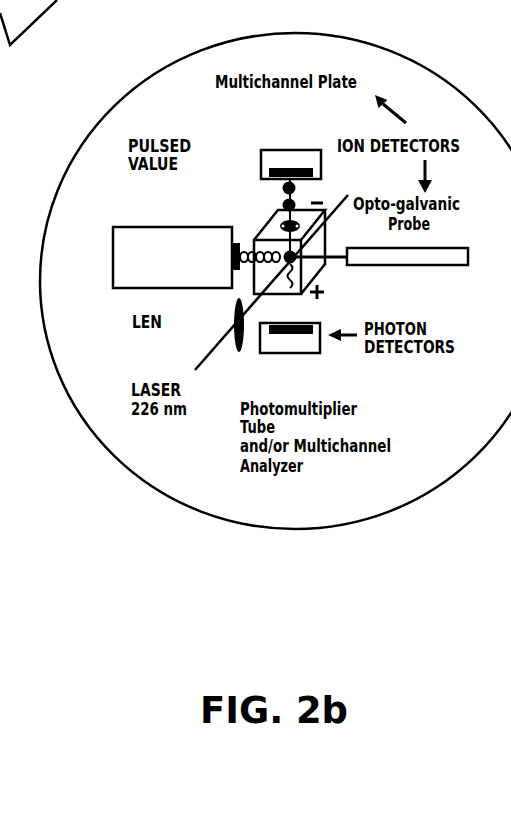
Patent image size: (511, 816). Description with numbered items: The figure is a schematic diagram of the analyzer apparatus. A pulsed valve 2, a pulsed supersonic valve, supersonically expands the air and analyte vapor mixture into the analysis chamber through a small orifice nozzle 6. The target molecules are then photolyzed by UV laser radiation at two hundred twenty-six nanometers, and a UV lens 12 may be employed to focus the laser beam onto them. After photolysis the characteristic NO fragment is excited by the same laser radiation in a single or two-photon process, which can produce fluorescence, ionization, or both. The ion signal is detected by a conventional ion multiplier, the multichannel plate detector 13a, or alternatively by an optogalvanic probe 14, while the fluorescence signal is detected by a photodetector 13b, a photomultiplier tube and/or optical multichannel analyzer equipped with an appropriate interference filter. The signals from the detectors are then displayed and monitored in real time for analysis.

The pulsed valve 2 is at (176, 257).
The small orifice nozzle 6 is at (277, 239).
The UV lens 12 is at (215, 325).
The multichannel plate detector 13a is at (291, 148).
The photodetector 13b is at (290, 354).
The optogalvanic probe 14 is at (385, 240).